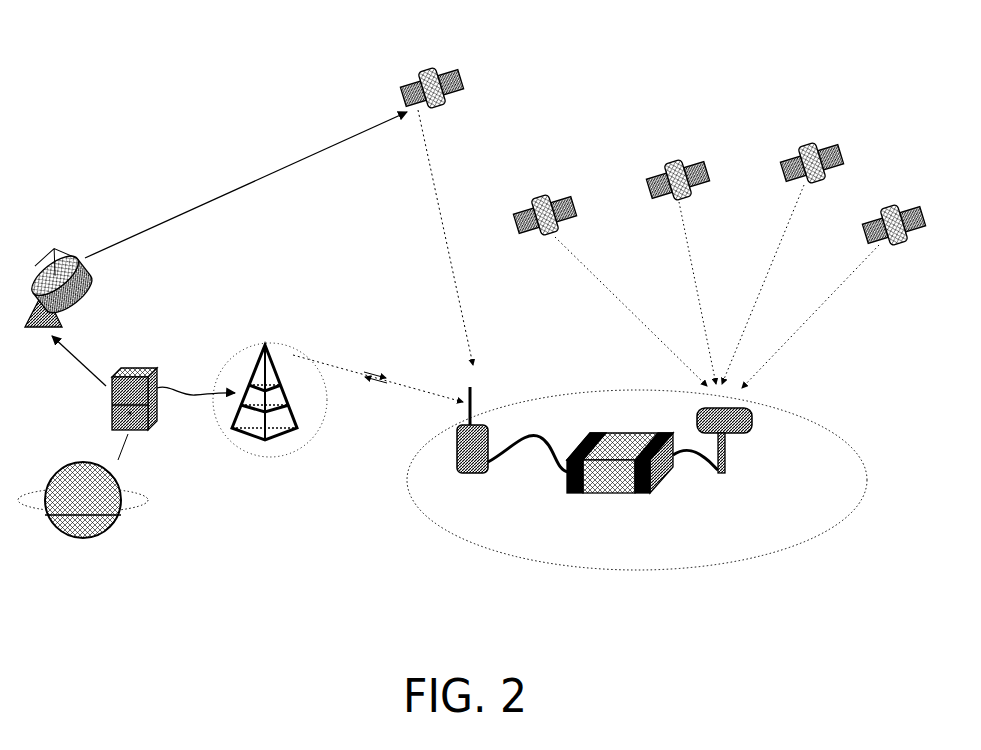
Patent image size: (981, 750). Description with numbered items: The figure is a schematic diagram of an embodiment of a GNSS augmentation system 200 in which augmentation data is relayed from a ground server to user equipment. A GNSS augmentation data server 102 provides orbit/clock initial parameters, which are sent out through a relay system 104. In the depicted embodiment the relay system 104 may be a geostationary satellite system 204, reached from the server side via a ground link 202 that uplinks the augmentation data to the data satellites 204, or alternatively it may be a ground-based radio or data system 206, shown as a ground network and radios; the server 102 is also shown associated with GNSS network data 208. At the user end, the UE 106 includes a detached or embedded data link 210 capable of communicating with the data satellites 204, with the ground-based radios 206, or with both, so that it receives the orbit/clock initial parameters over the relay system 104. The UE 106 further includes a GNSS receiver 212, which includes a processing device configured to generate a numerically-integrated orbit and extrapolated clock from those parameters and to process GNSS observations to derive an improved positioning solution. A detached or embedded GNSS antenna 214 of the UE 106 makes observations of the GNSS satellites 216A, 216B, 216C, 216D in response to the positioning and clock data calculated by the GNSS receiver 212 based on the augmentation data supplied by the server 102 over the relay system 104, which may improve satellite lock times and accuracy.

The GNSS augmentation system 200 is at (175, 78).
The relay system 104 is at (192, 183).
The ground link 202 is at (52, 248).
The geostationary satellite system 204 is at (458, 76).
The GNSS satellite 216A is at (556, 229).
The GNSS satellite 216B is at (695, 195).
The GNSS satellite 216C is at (843, 150).
The GNSS satellite 216D is at (896, 246).
The GNSS augmentation data server 102 is at (140, 430).
The ground-based radio or data system 206 is at (288, 433).
The GNSS network data 208 is at (95, 538).
The UE 106 is at (704, 572).
The detached or embedded data link 210 is at (488, 433).
The GNSS receiver 212 is at (630, 433).
The detached or embedded GNSS antenna 214 is at (737, 434).